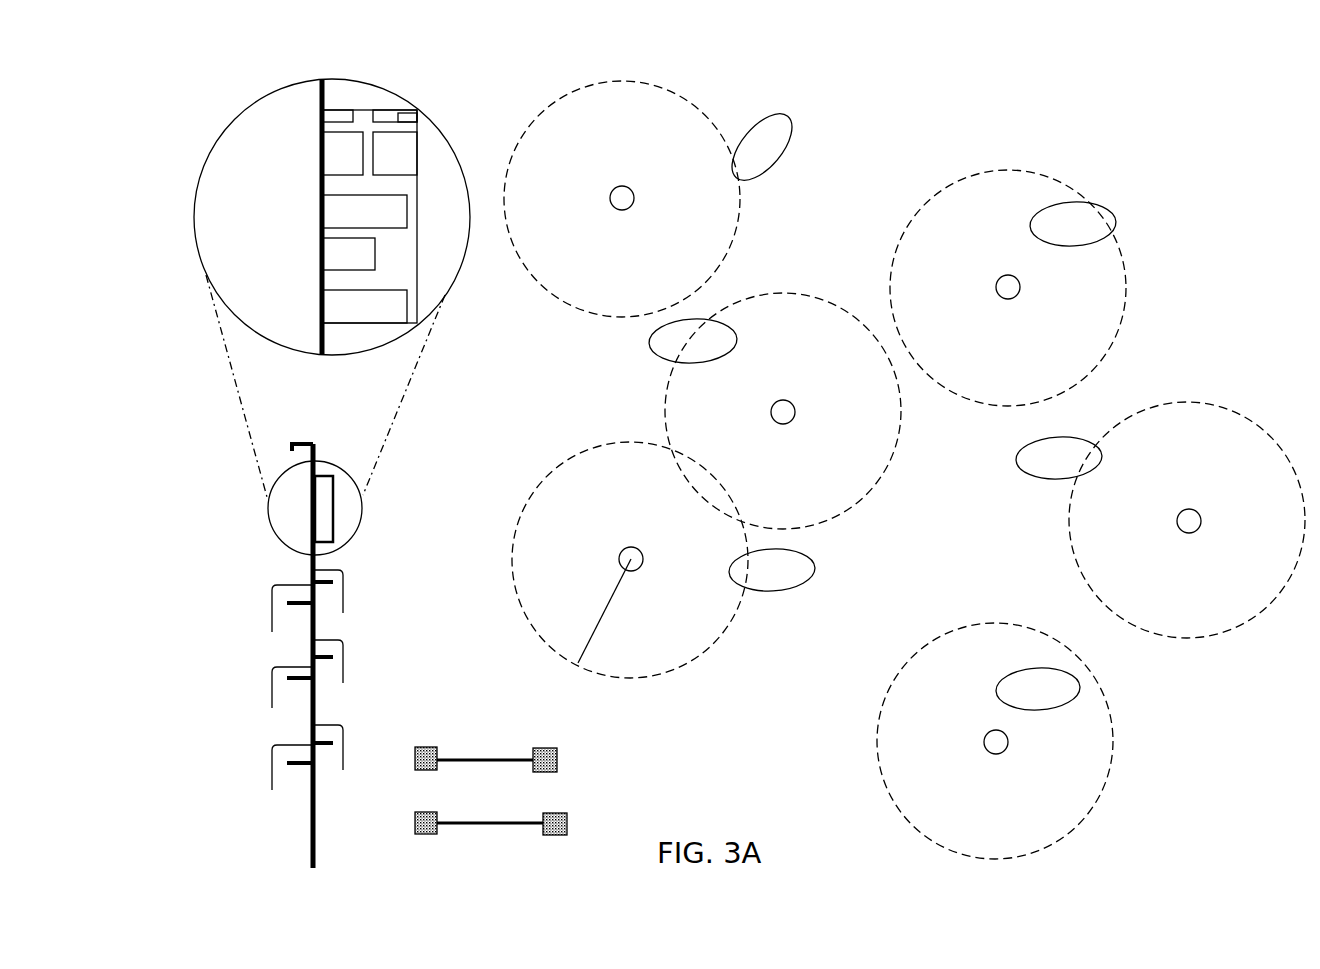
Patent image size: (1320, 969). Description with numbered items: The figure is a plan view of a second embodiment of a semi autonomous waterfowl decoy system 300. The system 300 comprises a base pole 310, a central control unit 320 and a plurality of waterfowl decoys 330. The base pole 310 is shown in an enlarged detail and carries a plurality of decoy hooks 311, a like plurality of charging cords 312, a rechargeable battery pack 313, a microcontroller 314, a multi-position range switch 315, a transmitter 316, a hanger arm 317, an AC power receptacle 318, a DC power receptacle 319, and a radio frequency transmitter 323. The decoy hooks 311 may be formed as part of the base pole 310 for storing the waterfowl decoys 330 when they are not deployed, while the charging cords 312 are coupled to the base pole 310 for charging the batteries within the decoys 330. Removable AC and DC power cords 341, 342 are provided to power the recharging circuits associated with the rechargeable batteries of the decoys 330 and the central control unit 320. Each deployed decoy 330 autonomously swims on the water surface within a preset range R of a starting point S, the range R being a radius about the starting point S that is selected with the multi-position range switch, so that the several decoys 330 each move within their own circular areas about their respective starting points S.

The semi autonomous waterfowl decoy system 300 is at (1150, 267).
The base pole 310 is at (308, 837).
The decoy hooks 311 is at (288, 606).
The charging cords 312 is at (342, 595).
The rechargeable battery pack 313 is at (343, 153).
The microcontroller 314 is at (353, 207).
The multi-position range switch 315 is at (353, 260).
The transmitter 316 is at (343, 302).
The hanger arm 317 is at (292, 452).
The AC power receptacle 318 is at (333, 110).
The DC power receptacle 319 is at (397, 118).
The central control unit 320 is at (333, 507).
The radio frequency (RF) transmitter 323 is at (407, 153).
The waterfowl decoys 330 is at (802, 580).
The AC power cord 341 is at (567, 824).
The DC power cord 342 is at (557, 760).
The starting point S is at (622, 186).
The preset range R is at (583, 642).